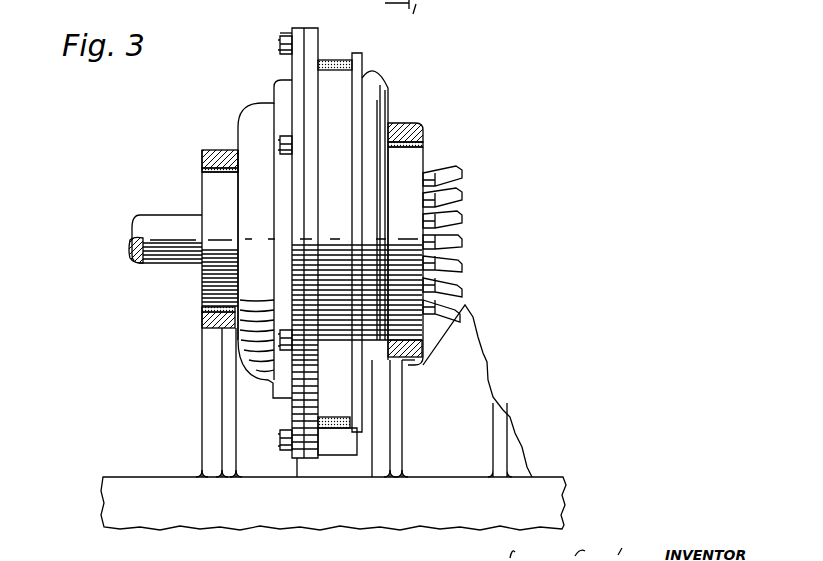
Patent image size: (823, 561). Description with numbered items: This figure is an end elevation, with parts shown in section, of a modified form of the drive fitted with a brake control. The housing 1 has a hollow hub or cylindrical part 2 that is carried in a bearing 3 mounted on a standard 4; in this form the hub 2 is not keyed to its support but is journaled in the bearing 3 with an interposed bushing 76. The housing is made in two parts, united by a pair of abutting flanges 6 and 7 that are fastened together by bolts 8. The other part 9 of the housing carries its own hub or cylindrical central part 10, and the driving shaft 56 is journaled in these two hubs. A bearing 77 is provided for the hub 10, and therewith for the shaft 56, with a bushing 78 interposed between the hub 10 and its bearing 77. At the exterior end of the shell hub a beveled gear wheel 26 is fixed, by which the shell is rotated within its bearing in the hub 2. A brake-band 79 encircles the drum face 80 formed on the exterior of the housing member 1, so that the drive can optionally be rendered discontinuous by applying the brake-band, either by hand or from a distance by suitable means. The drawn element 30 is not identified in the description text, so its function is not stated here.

The housing 1 is at (390, 90).
The hollow hub 2 is at (408, 168).
The bearing 3 is at (410, 123).
The standard 4 is at (503, 427).
The abutting flange 6 is at (297, 25).
The abutting flange 7 is at (304, 28).
The bolts 8 is at (279, 50).
The housing part 9 is at (252, 112).
The hub 10 is at (215, 193).
The beveled gear wheel 26 is at (445, 190).
The support foot 30 is at (410, 362).
The driving shaft 56 is at (152, 228).
The bushing 76 is at (425, 146).
The bearing 77 is at (216, 150).
The bushing 78 is at (203, 172).
The brake-band 79 is at (330, 60).
The drum face 80 is at (330, 92).